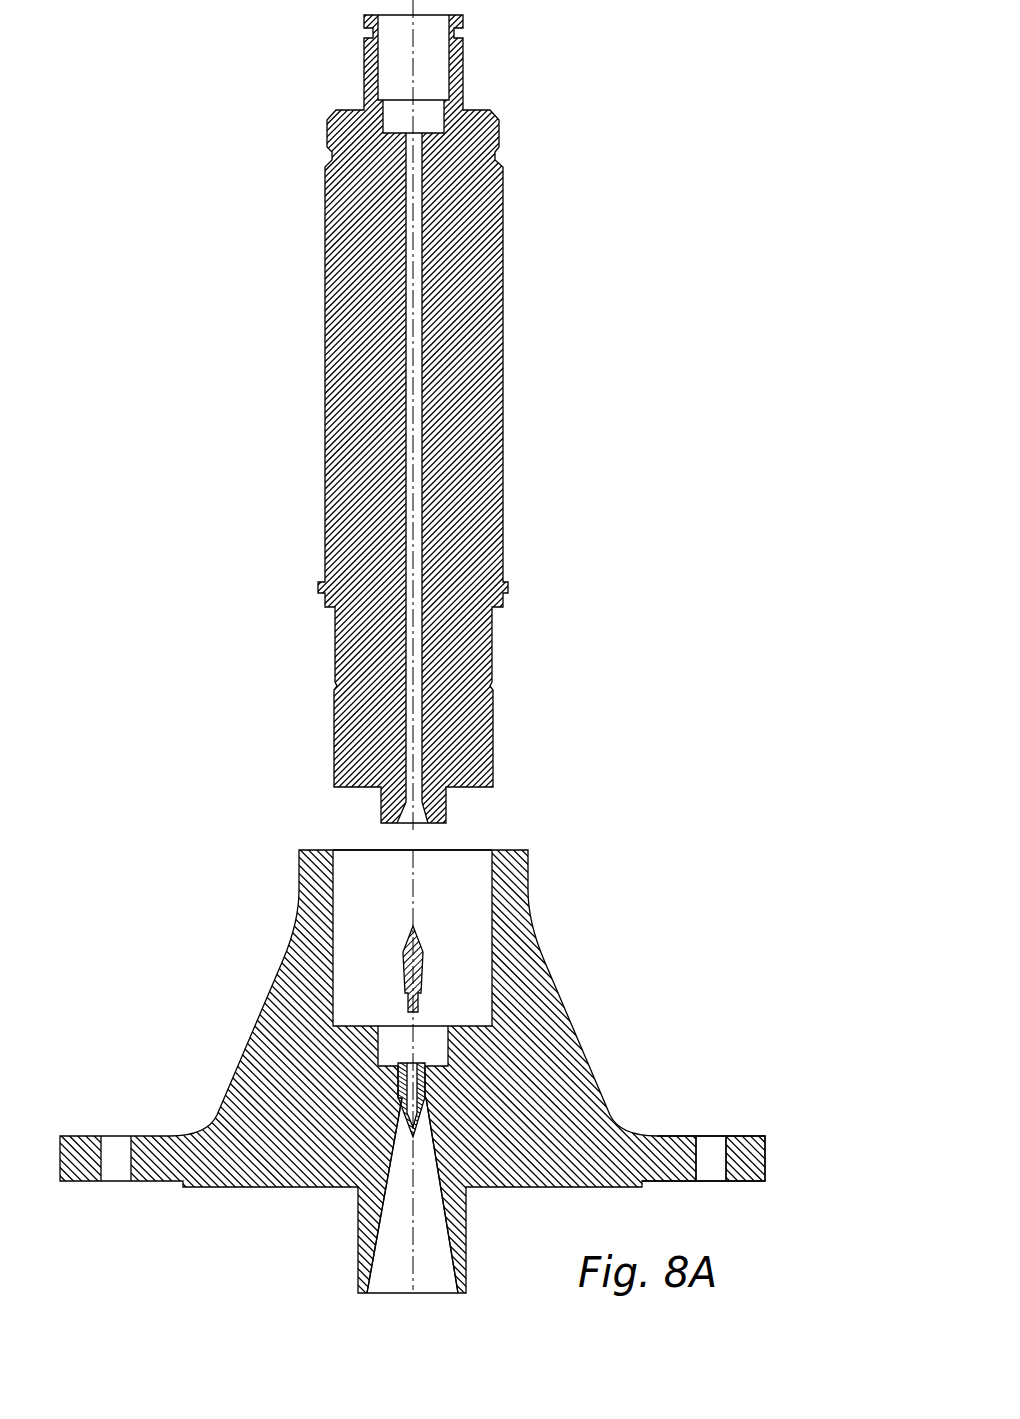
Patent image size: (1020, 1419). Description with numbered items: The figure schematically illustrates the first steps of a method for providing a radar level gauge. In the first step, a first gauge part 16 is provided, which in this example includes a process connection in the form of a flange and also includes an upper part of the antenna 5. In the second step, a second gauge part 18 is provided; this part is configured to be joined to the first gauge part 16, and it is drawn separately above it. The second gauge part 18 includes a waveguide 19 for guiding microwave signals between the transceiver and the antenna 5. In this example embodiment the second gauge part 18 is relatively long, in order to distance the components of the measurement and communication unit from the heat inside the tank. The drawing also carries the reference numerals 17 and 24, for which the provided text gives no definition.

The injection nozzle body 18 is at (502, 217).
The nozzle melt channel 19 is at (416, 193).
The nozzle holder / mold insert 16 is at (579, 1042).
The mold flange plate 17 is at (748, 1112).
The valve needle 24 is at (441, 1006).
The conical outlet channel 5 is at (453, 1258).